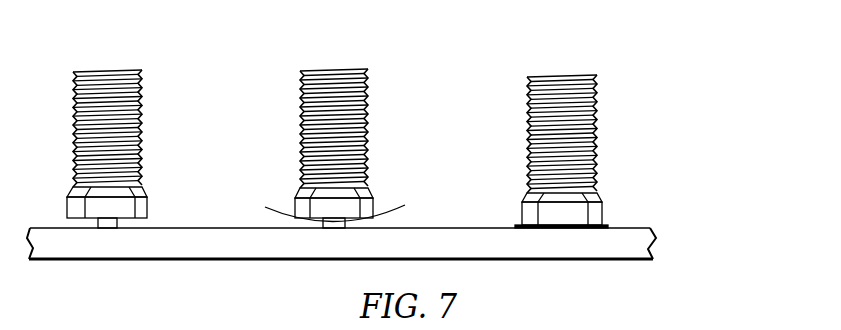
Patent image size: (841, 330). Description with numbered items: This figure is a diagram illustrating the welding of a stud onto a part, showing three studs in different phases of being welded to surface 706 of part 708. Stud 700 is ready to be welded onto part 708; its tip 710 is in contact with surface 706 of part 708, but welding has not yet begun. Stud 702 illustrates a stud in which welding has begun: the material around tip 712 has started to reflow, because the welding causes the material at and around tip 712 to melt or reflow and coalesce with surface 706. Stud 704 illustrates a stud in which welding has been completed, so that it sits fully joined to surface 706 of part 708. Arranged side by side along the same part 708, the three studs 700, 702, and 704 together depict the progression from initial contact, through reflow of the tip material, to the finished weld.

The stud 700 is at (102, 70).
The stud 702 is at (328, 70).
The stud 704 is at (570, 76).
The surface 706 is at (210, 227).
The part 708 is at (685, 248).
The tip 710 is at (96, 226).
The tip 712 is at (313, 226).